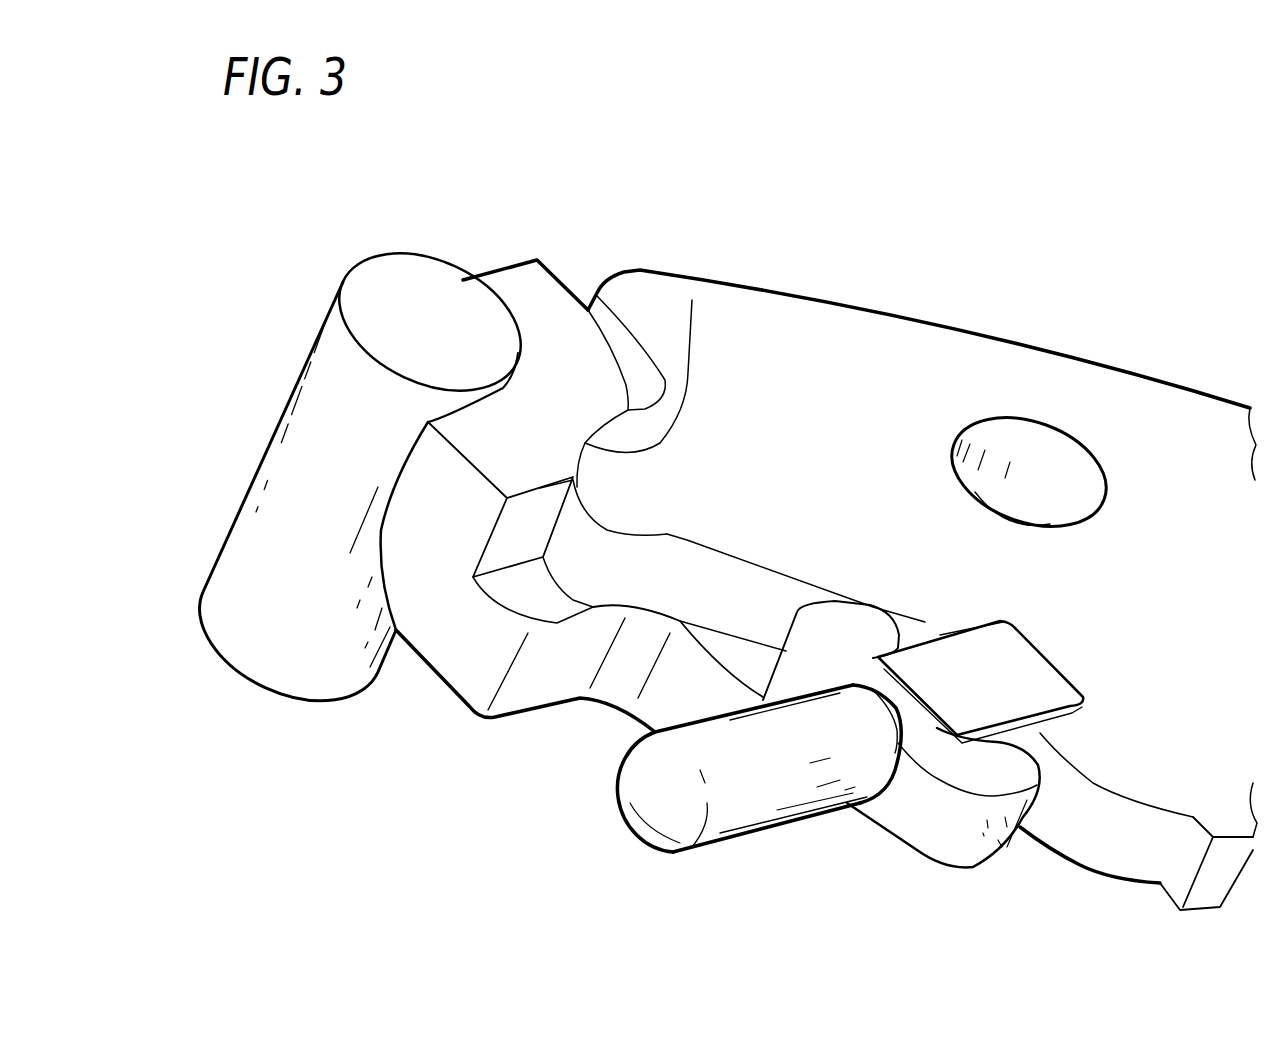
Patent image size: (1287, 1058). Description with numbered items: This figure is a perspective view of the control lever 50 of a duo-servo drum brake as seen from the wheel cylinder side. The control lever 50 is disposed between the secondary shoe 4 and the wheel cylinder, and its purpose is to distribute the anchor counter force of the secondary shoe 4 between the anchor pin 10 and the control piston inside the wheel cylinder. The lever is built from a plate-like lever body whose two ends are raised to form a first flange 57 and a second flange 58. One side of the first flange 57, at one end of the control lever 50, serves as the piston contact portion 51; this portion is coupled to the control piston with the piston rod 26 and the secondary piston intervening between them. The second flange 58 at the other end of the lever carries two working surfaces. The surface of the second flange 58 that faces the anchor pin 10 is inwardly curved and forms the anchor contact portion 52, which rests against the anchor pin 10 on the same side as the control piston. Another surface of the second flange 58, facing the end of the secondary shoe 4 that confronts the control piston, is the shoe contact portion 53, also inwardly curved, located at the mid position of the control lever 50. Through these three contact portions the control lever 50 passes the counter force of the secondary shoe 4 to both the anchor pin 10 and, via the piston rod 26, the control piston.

The secondary shoe 4 is at (802, 353).
The anchor pin 10 is at (300, 443).
The piston rod 26 is at (772, 780).
The control lever 50 is at (453, 663).
The piston contact portion 51 is at (940, 727).
The anchor contact portion 52 is at (507, 334).
The shoe contact portion 53 is at (692, 300).
The first flange 57 is at (1030, 690).
The second flange 58 is at (562, 350).